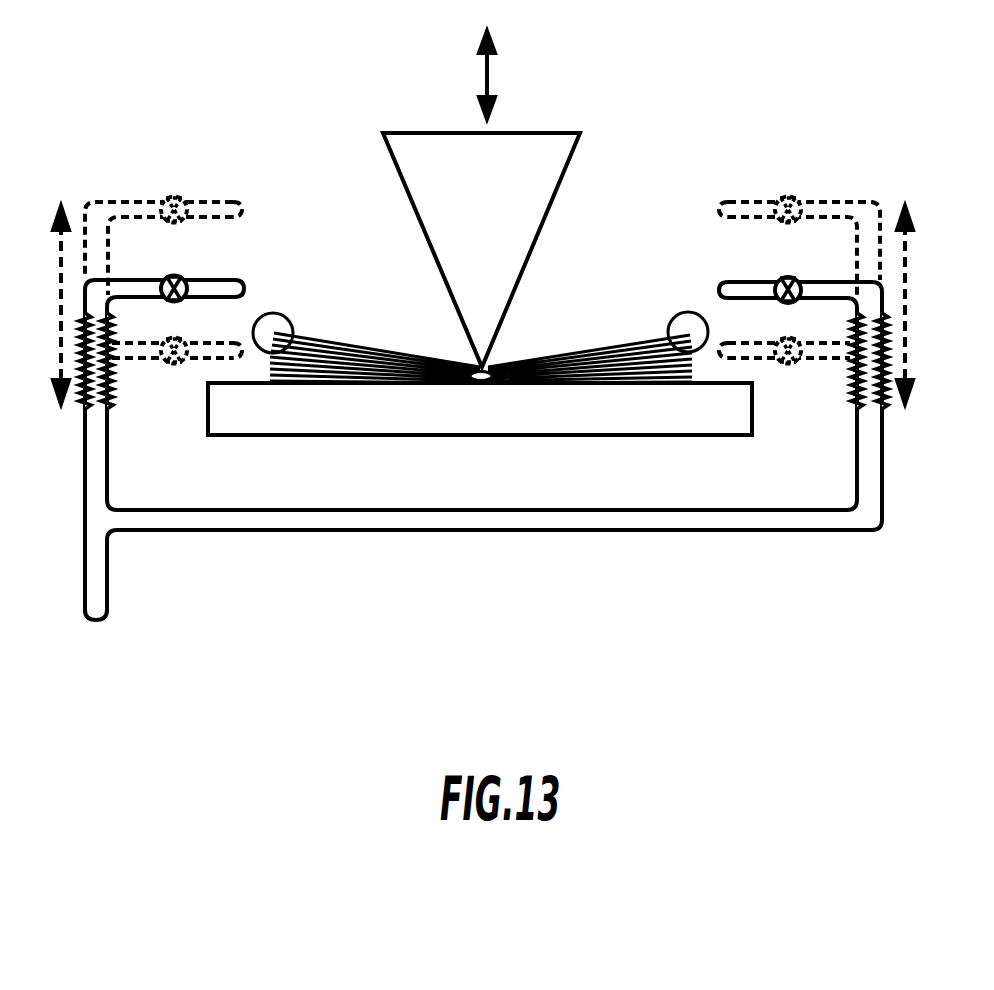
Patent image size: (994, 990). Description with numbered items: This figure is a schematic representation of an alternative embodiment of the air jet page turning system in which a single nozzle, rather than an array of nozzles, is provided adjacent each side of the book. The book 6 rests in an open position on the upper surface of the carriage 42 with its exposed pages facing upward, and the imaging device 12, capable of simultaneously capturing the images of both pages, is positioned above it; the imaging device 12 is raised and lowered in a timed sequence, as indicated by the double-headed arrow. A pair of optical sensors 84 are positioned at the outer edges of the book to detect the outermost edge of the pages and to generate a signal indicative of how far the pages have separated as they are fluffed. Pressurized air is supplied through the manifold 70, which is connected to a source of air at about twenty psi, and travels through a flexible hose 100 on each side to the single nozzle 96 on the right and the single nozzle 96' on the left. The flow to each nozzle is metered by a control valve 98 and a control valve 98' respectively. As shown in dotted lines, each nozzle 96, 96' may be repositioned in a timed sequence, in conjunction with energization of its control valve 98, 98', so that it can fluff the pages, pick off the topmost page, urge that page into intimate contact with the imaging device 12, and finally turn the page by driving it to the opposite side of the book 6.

The imaging device 12 is at (522, 158).
The book 6 is at (538, 345).
The optical sensor 84 is at (288, 318).
The carriage 42 is at (627, 418).
The air manifold 70 is at (213, 523).
The single nozzle 96 is at (708, 269).
The single nozzle 96' is at (267, 267).
The control valve 98 is at (748, 257).
The control valve 98' is at (233, 252).
The flexible hose 100 is at (82, 400).